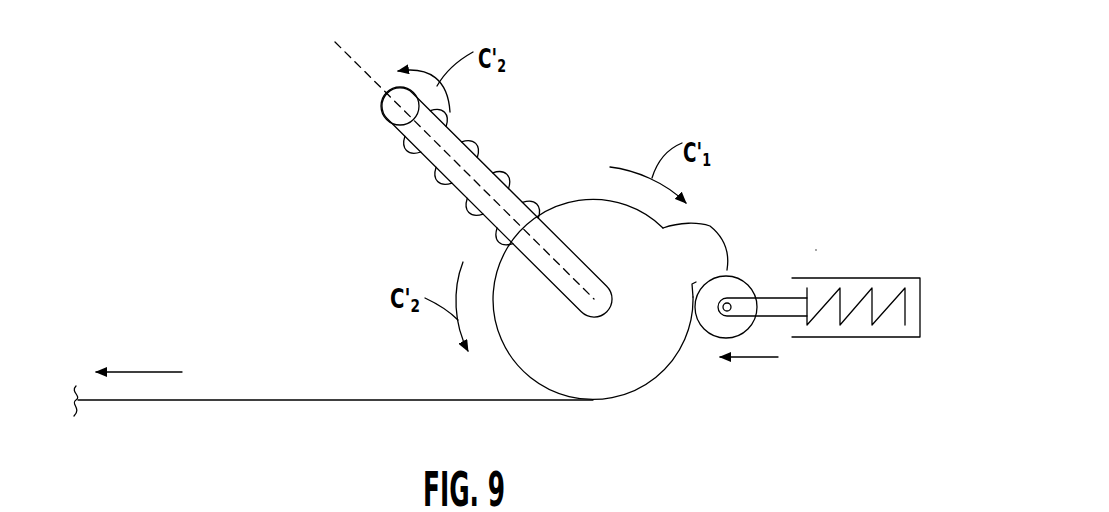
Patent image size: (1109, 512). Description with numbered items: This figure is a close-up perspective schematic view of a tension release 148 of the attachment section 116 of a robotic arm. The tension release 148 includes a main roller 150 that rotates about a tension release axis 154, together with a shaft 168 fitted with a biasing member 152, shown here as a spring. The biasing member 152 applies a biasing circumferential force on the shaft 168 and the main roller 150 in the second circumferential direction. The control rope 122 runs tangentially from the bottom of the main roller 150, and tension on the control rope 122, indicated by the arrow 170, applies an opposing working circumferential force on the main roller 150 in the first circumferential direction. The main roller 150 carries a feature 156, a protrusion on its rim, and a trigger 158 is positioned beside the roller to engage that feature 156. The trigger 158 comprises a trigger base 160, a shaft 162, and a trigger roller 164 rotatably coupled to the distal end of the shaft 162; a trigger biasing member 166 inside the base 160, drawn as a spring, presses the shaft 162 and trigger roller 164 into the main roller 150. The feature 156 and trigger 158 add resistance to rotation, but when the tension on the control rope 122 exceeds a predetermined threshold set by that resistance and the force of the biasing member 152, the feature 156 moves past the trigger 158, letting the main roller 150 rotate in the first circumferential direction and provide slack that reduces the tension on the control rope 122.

The tensioning mechanism 116 is at (862, 75).
The tension release 148 is at (748, 96).
The control rope 122 is at (217, 400).
The main roller 150 is at (614, 376).
The biasing member 152 is at (477, 157).
The tension release axis 154 is at (573, 240).
The feature 156 is at (698, 247).
The trigger 158 is at (817, 248).
The trigger base 160 is at (906, 278).
The shaft 162 is at (775, 313).
The trigger roller 164 is at (713, 327).
The trigger biasing member 166 is at (856, 300).
The shaft 168 is at (432, 156).
The arrow 170 is at (138, 372).